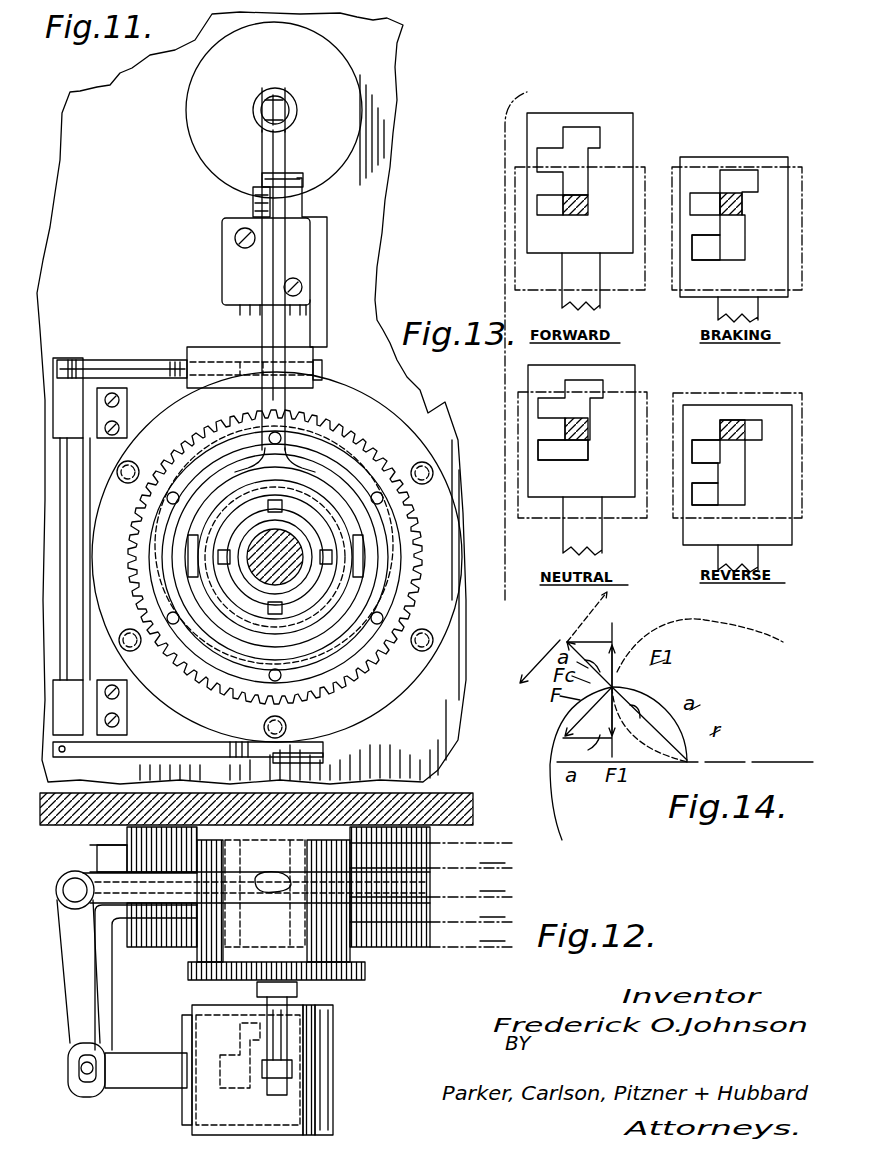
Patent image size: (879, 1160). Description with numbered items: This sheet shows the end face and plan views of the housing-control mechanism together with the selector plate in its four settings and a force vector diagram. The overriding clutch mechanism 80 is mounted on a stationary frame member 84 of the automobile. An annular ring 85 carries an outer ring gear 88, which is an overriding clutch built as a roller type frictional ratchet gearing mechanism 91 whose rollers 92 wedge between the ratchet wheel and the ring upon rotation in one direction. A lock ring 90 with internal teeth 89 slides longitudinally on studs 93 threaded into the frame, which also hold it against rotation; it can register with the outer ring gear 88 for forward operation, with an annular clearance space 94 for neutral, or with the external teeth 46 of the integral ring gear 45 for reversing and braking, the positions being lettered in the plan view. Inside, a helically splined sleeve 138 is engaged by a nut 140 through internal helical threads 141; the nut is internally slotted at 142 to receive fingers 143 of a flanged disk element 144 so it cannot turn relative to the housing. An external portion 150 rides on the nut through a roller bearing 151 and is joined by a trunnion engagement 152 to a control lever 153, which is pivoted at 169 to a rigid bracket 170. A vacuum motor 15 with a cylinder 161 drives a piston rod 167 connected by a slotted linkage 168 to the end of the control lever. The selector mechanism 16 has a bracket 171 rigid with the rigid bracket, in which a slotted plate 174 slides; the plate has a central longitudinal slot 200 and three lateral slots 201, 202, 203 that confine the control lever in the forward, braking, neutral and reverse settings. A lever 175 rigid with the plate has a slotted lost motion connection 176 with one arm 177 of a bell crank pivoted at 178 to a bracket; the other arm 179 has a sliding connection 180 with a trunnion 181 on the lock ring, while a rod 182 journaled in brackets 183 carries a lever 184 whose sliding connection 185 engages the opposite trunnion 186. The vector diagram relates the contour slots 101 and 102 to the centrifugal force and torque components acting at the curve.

In FIG. 11, the vacuum motor 15 is at (360, 57).
In FIG. 12, the vacuum motor 15 is at (177, 991).
In FIG. 11, the selector mechanism 16 is at (334, 365).
In FIG. 13, the selector mechanism 16 is at (629, 105).
In FIG. 12, the ring gear 45 is at (380, 960).
In FIG. 11, the external teeth 46 is at (420, 575).
In FIG. 12, the external teeth 46 is at (340, 985).
In FIG. 11, the overriding clutch mechanism 80 is at (438, 438).
In FIG. 12, the overriding clutch mechanism 80 is at (170, 965).
In FIG. 11, the stationary frame member 84 is at (375, 287).
In FIG. 12, the stationary frame member 84 is at (256, 809).
In FIG. 11, the annular ring 85 is at (366, 672).
In FIG. 11, the outer ring gear 88 is at (328, 662).
In FIG. 12, the outer ring gear 88 is at (405, 845).
In FIG. 11, the internal teeth 89 is at (398, 500).
In FIG. 11, the lock ring 90 is at (440, 602).
In FIG. 12, the lock ring 90 is at (448, 860).
In FIG. 11, the roller type frictional ratchet gearing mechanism 91 is at (292, 672).
In FIG. 11, the rollers 92 is at (270, 682).
In FIG. 11, the studs 93 is at (432, 470).
In FIG. 12, the studs 93 is at (466, 946).
In FIG. 12, the annular clearance space 94 is at (360, 840).
In FIG. 14, the contour slot 101 is at (572, 812).
In FIG. 14, the contour slot 102 is at (752, 632).
In FIG. 11, the helically splined sleeve 138 is at (252, 600).
In FIG. 11, the nut 140 is at (322, 584).
In FIG. 11, the internal helical threads 141 is at (272, 612).
In FIG. 11, the internal slots 142 is at (300, 492).
In FIG. 11, the fingers 143 is at (312, 482).
In FIG. 11, the flanged disk element 144 is at (187, 593).
In FIG. 11, the external portion 150 is at (330, 600).
In FIG. 11, the roller bearing 151 is at (200, 457).
In FIG. 11, the trunnion engagement 152 is at (364, 557).
In FIG. 11, the control lever 153 is at (268, 323).
In FIG. 12, the control lever 153 is at (290, 1068).
In FIG. 13, the control lever 153 is at (588, 203).
In FIG. 11, the cylinder 161 is at (205, 143).
In FIG. 12, the cylinder 161 is at (262, 933).
In FIG. 12, the piston rod 167 is at (262, 1002).
In FIG. 11, the slotted linkage 168 is at (290, 100).
In FIG. 12, the slotted linkage 168 is at (292, 1074).
In FIG. 11, the pivot 169 is at (255, 205).
In FIG. 11, the rigid bracket 170 is at (318, 230).
In FIG. 12, the rigid bracket 170 is at (333, 1106).
In FIG. 11, the bracket 171 is at (195, 350).
In FIG. 12, the bracket 171 is at (196, 1130).
In FIG. 13, the bracket 171 is at (648, 165).
In FIG. 11, the slotted plate 174 is at (325, 372).
In FIG. 12, the slotted plate 174 is at (187, 1105).
In FIG. 13, the slotted plate 174 is at (634, 252).
In FIG. 11, the lever 175 is at (140, 378).
In FIG. 12, the lever 175 is at (133, 1058).
In FIG. 13, the lever 175 is at (600, 296).
In FIG. 11, the slotted lost motion connection 176 is at (66, 348).
In FIG. 12, the slotted lost motion connection 176 is at (74, 1085).
In FIG. 11, the bell crank arm 177 is at (82, 360).
In FIG. 12, the bell crank arm 177 is at (60, 978).
In FIG. 12, the pivot 178 is at (70, 897).
In FIG. 11, the bell crank arm 179 is at (125, 358).
In FIG. 12, the bell crank arm 179 is at (112, 930).
In FIG. 12, the sliding connection 180 is at (317, 810).
In FIG. 12, the trunnion 181 is at (252, 810).
In FIG. 11, the rod 182 is at (78, 568).
In FIG. 12, the rod 182 is at (80, 900).
In FIG. 11, the brackets 183 is at (118, 440).
In FIG. 12, the brackets 183 is at (88, 863).
In FIG. 11, the lever 184 is at (130, 758).
In FIG. 11, the sliding connection 185 is at (252, 760).
In FIG. 11, the trunnion 186 is at (312, 760).
In FIG. 13, the central longitudinal slot 200 is at (586, 180).
In FIG. 13, the lateral slot 201 is at (600, 130).
In FIG. 13, the lateral slot 202 is at (700, 198).
In FIG. 13, the lateral slot 203 is at (553, 220).